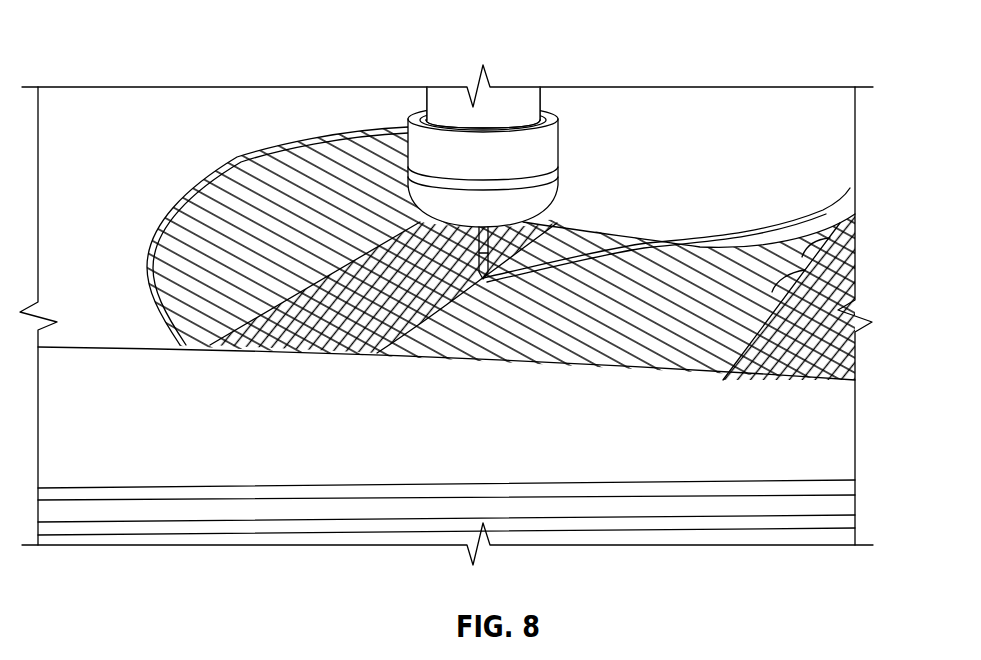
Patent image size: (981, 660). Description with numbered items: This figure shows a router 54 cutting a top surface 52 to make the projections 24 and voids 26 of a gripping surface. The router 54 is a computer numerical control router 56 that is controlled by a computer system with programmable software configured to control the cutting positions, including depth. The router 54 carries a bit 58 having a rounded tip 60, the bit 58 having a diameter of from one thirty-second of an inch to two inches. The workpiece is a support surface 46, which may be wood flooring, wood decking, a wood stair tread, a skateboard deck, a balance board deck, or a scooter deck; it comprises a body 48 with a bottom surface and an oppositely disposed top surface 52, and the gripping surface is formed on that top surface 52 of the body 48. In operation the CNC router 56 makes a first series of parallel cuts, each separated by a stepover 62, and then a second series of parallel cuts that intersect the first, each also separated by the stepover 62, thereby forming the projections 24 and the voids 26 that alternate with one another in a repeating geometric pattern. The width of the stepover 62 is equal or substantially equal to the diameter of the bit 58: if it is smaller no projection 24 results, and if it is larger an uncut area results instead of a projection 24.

The projections 24 is at (345, 300).
The voids 26 is at (760, 332).
The support surface 46 is at (117, 117).
The body 48 is at (65, 108).
The top surface 52 is at (800, 435).
The router 54 is at (530, 100).
The computer numerical control (CNC) router 56 is at (547, 118).
The bit 58 is at (597, 231).
The rounded tip 60 is at (643, 238).
The stepover 62 is at (803, 258).